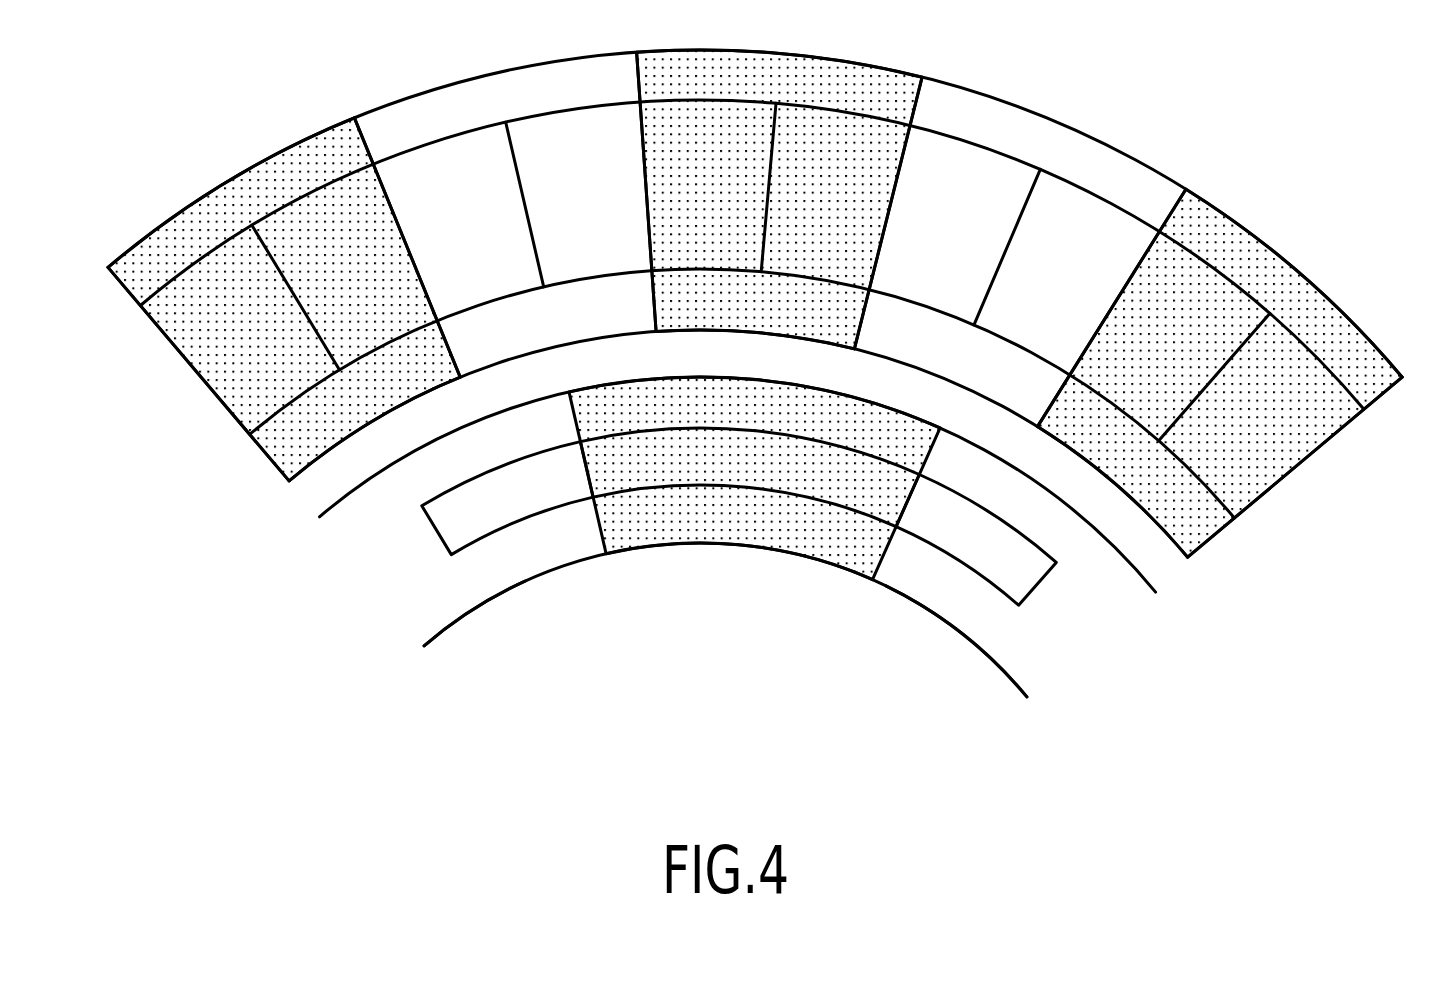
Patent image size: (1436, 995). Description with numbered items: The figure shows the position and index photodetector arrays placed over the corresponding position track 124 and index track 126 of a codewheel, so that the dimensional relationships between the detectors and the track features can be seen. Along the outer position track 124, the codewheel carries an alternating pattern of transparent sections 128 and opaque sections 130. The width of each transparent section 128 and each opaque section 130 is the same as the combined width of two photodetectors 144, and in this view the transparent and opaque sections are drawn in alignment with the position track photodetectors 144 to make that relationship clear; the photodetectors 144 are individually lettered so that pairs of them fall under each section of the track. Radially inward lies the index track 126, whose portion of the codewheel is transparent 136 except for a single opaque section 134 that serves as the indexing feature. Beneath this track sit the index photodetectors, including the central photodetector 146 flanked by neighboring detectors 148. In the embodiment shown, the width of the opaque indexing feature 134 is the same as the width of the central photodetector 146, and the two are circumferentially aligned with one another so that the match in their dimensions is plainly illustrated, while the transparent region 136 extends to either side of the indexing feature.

The position track 124 is at (755, 284).
The index track 126 is at (1135, 547).
The transparent sections 128 is at (426, 91).
The opaque sections 130 is at (217, 188).
The opaque section 134 is at (727, 550).
The transparent portion 136 is at (523, 588).
The photodetectors 144 is at (1308, 138).
The central photodetector 146 is at (870, 500).
The I segment 148 is at (967, 537).